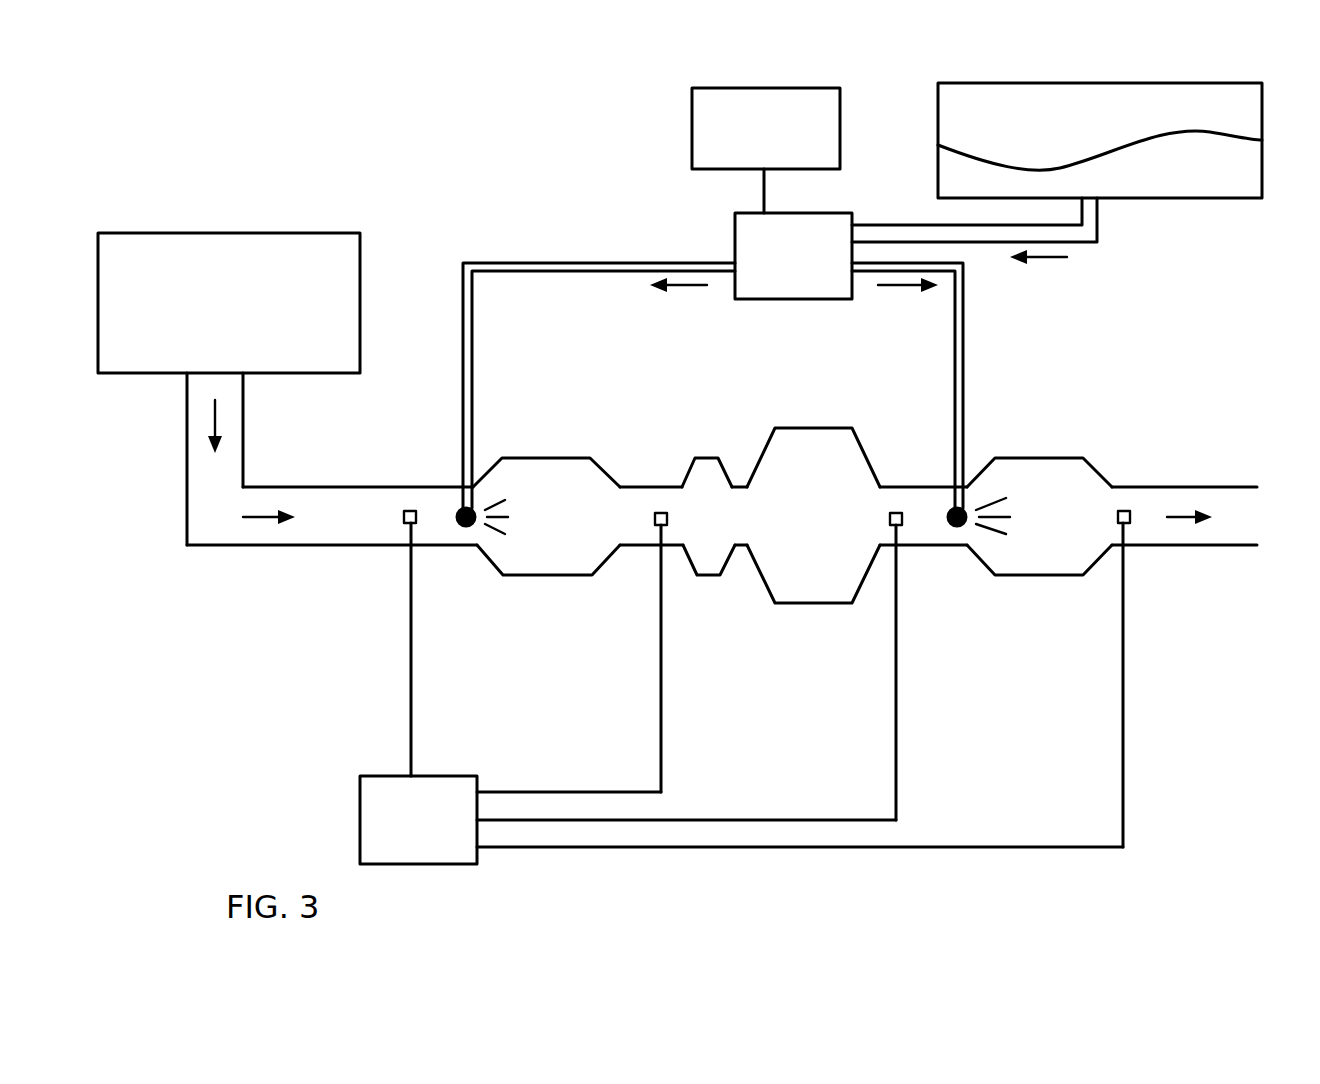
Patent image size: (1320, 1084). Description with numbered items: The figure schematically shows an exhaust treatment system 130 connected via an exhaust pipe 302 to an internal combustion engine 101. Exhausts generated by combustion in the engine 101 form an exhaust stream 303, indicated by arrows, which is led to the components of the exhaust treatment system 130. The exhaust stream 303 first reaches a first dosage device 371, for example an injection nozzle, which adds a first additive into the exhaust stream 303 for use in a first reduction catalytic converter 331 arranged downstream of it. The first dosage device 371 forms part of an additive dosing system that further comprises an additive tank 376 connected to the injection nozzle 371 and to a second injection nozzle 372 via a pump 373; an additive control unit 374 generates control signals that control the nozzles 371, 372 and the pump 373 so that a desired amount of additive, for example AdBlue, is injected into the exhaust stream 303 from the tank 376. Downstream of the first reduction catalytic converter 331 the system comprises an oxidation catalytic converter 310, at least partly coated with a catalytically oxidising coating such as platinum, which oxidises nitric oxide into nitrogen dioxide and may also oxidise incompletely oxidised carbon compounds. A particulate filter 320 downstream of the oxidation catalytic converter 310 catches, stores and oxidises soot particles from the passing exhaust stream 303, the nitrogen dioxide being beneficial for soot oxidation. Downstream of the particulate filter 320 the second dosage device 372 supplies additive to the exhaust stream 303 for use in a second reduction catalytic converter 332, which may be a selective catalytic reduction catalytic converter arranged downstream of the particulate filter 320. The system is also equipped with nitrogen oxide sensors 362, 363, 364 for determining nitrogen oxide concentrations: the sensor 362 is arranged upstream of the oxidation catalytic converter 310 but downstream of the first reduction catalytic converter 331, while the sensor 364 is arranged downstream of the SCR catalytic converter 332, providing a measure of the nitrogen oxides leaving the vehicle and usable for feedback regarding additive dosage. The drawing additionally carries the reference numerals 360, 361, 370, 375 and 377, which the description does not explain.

The internal combustion engine 101 is at (229, 303).
The exhaust pipe 302 is at (187, 462).
The exhaust stream 303 is at (262, 522).
The oxidation catalytic converter 310 is at (703, 552).
The particulate filter 320 is at (792, 590).
The first reduction catalytic converter 331 is at (530, 550).
The second reduction catalytic converter 332 is at (1040, 550).
The controller 360 is at (741, 820).
The first sensor 361 is at (410, 511).
The NOx sensor 362 is at (661, 513).
The NOx sensor 363 is at (896, 513).
The NOx sensor 364 is at (1123, 511).
The reagent injection system 370 is at (606, 147).
The first dosage device 371 is at (462, 527).
The second dosage device 372 is at (957, 527).
The pump 373 is at (793, 256).
The additive control unit 374 is at (766, 150).
The supply lines 375 is at (682, 290).
The additive tank 376 is at (1100, 140).
The supply line from tank 377 is at (1100, 228).
The exhaust treatment system 130 is at (1184, 680).